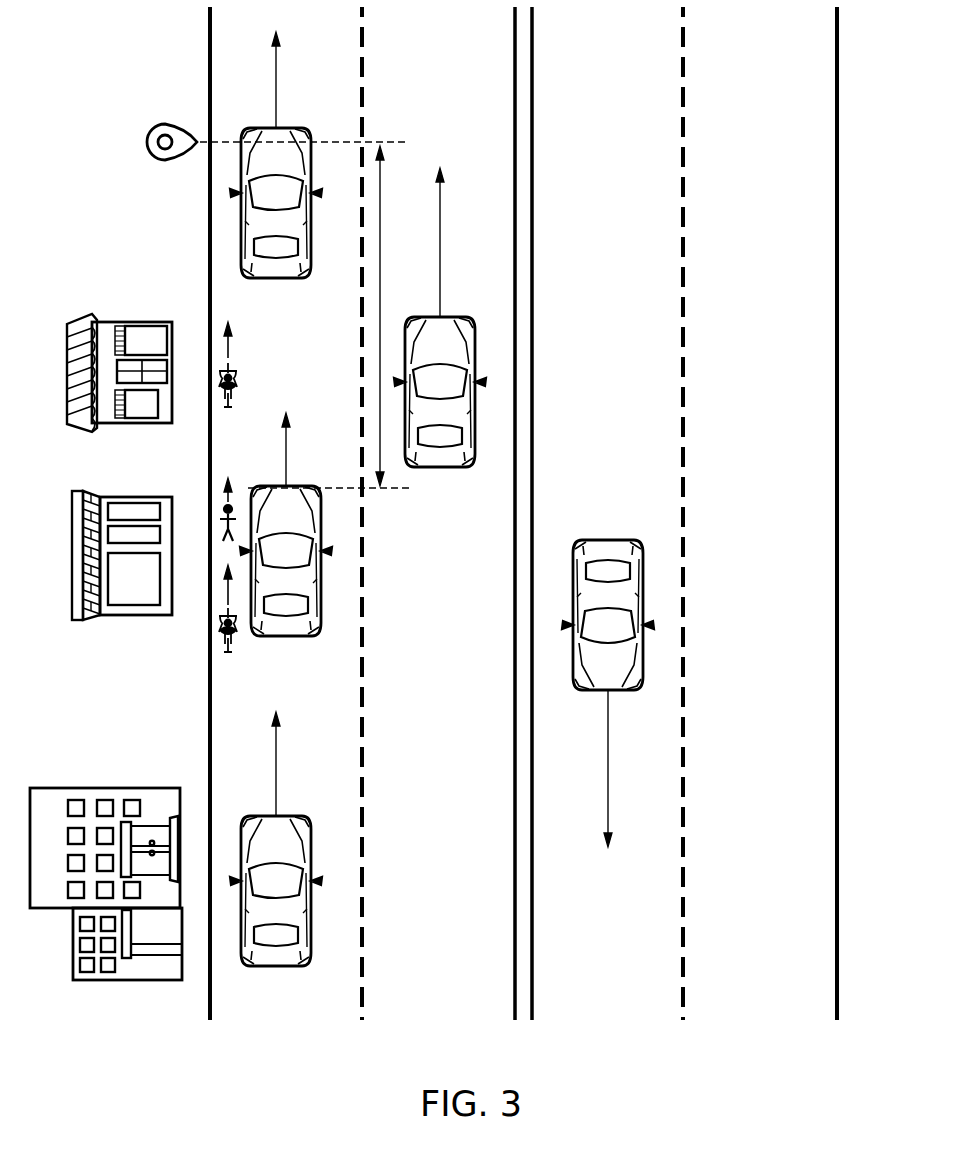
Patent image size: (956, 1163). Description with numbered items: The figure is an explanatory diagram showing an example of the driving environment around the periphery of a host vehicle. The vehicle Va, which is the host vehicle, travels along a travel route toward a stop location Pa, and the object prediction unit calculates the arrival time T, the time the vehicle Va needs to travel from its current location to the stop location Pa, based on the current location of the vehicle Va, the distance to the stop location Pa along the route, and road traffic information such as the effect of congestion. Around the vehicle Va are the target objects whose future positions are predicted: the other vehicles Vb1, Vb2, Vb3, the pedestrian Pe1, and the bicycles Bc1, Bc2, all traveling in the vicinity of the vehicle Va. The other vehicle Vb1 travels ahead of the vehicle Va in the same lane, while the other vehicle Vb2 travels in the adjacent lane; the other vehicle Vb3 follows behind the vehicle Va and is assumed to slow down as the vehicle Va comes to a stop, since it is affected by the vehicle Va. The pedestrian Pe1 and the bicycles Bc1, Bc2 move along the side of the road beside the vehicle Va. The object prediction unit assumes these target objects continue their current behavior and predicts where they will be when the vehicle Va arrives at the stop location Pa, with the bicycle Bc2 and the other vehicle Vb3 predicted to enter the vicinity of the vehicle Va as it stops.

The stop location Pa is at (165, 124).
The other vehicle Vb1 is at (300, 128).
The other vehicle Vb2 is at (462, 320).
The arrival time T is at (387, 316).
The vehicle Va is at (303, 582).
The other vehicle Vb3 is at (310, 906).
The bicycle Bc1 is at (238, 381).
The pedestrian Pe1 is at (221, 518).
The bicycle Bc2 is at (222, 632).